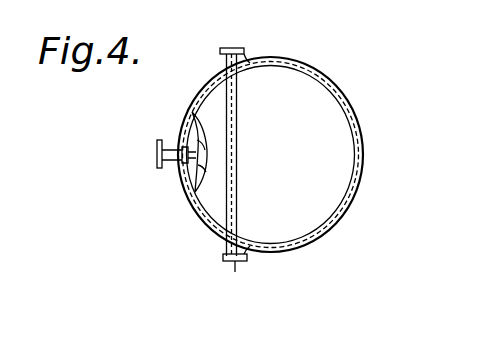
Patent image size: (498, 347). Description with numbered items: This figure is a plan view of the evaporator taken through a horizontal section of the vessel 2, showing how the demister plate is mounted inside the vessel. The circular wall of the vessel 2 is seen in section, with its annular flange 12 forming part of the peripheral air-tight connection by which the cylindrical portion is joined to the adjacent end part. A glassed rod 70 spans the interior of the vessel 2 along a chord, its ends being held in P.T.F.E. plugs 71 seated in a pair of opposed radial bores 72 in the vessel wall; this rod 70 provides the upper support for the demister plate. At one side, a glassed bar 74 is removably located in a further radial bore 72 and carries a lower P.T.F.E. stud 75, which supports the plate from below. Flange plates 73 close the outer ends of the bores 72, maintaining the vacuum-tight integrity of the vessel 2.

The vessel 2 is at (358, 116).
The annular flange 12 is at (364, 156).
The glassed rod 70 is at (238, 183).
The P.T.F.E. plug 71 is at (219, 51).
The radial bore 72 is at (222, 68).
The flange plate 73 is at (243, 58).
The glassed bar 74 is at (165, 142).
The P.T.F.E. stud 75 is at (193, 148).